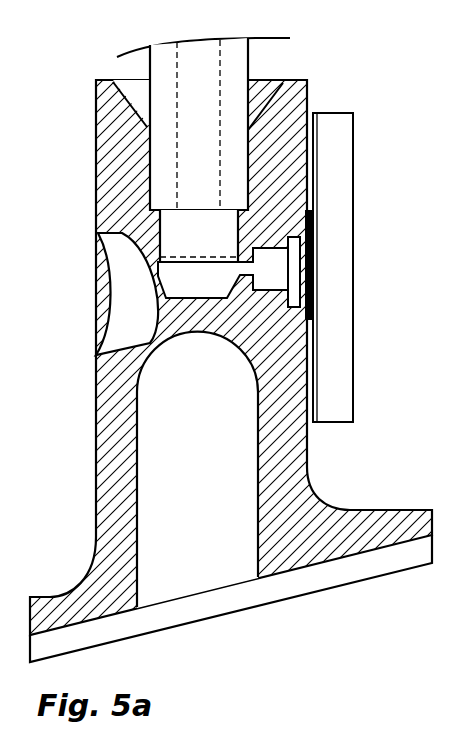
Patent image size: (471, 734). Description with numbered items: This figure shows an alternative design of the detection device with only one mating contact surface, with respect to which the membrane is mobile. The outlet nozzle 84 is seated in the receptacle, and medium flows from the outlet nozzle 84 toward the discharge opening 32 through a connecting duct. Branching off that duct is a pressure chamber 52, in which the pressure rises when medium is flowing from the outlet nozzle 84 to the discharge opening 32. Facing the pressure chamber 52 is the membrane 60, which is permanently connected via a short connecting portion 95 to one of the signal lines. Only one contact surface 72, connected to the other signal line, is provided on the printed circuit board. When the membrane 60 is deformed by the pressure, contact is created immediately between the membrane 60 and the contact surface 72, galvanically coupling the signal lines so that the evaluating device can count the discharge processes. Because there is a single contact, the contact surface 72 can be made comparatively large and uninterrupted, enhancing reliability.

The discharge opening 32 is at (137, 288).
The outlet nozzle 84 is at (237, 98).
The pressure chamber 52 is at (270, 275).
The contact surface 72 is at (317, 265).
The connecting portion 95 is at (312, 242).
The membrane 60 is at (317, 288).